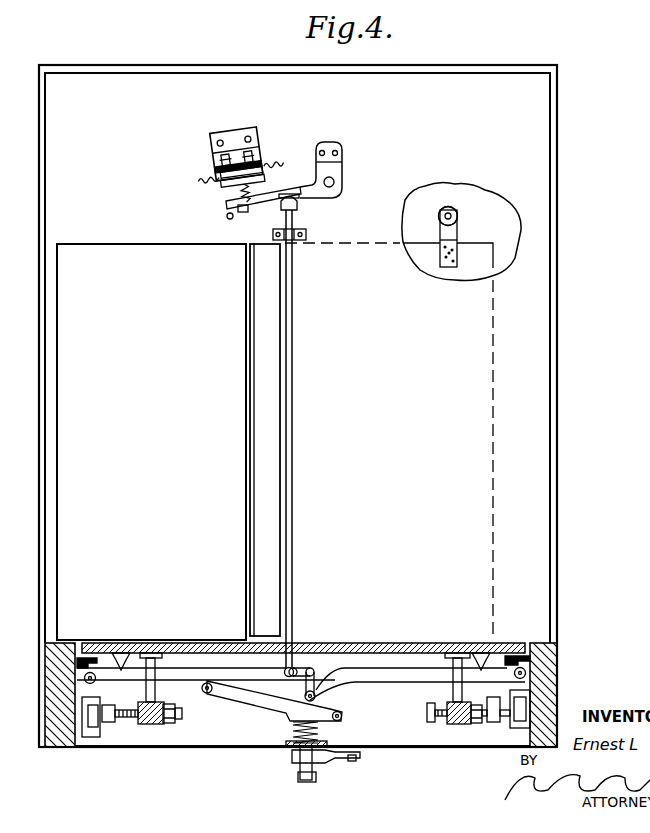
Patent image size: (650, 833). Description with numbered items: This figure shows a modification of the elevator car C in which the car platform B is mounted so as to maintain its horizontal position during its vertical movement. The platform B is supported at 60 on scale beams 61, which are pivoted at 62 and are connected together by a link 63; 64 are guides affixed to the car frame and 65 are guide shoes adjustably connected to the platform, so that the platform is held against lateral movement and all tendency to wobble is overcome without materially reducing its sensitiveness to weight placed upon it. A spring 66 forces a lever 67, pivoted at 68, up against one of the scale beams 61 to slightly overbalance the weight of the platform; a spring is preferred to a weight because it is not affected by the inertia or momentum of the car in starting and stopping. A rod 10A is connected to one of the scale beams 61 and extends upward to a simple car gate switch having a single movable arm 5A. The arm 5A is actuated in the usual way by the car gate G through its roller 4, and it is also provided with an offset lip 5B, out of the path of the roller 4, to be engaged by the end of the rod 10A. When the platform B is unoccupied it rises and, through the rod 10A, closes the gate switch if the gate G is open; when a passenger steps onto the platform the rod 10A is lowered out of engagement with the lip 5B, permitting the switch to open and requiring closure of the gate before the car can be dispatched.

The elevator car C is at (559, 88).
The car gate roller 4 is at (448, 207).
The car gate G is at (474, 252).
The movable arm 5A is at (266, 204).
The offset lip 5B is at (303, 198).
The rod 10A is at (294, 395).
The platform support 60 is at (137, 652).
The scale beams 61 is at (196, 672).
The pivot 62 is at (84, 673).
The link 63 is at (312, 690).
The guides 64 is at (97, 727).
The guide shoes 65 is at (103, 723).
The spring 66 is at (325, 722).
The lever 67 is at (243, 705).
The lever pivot 68 is at (340, 713).
The car platform B is at (337, 652).